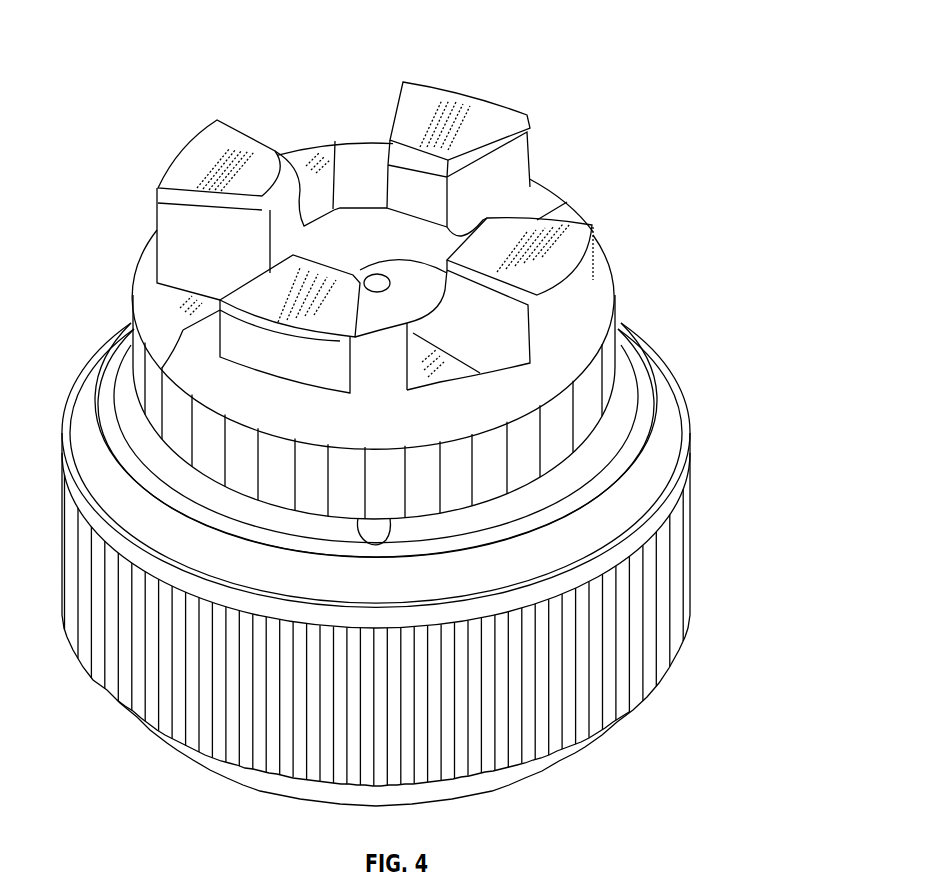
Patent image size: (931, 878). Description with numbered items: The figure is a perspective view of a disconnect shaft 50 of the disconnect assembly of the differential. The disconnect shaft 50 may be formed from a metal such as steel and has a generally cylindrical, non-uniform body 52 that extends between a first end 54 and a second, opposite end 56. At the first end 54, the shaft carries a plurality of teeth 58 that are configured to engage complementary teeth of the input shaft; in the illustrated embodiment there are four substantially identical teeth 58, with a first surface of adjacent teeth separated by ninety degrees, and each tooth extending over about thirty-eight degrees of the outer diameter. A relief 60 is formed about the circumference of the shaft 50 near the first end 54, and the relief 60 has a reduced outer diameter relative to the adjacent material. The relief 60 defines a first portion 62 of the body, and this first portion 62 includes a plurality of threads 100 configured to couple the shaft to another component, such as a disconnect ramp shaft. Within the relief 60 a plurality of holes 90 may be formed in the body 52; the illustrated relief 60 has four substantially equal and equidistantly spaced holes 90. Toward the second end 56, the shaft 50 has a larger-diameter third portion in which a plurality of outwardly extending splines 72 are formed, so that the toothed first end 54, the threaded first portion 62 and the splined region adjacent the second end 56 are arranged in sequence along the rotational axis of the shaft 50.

The disconnect shaft 50 is at (563, 44).
The body 52 is at (683, 448).
The first end 54 is at (483, 103).
The second end 56 is at (523, 780).
The teeth 58 is at (193, 147).
The relief 60 is at (598, 440).
The first portion 62 is at (619, 350).
The splines 72 is at (677, 591).
The holes 90 is at (365, 530).
The threads 100 is at (137, 367).